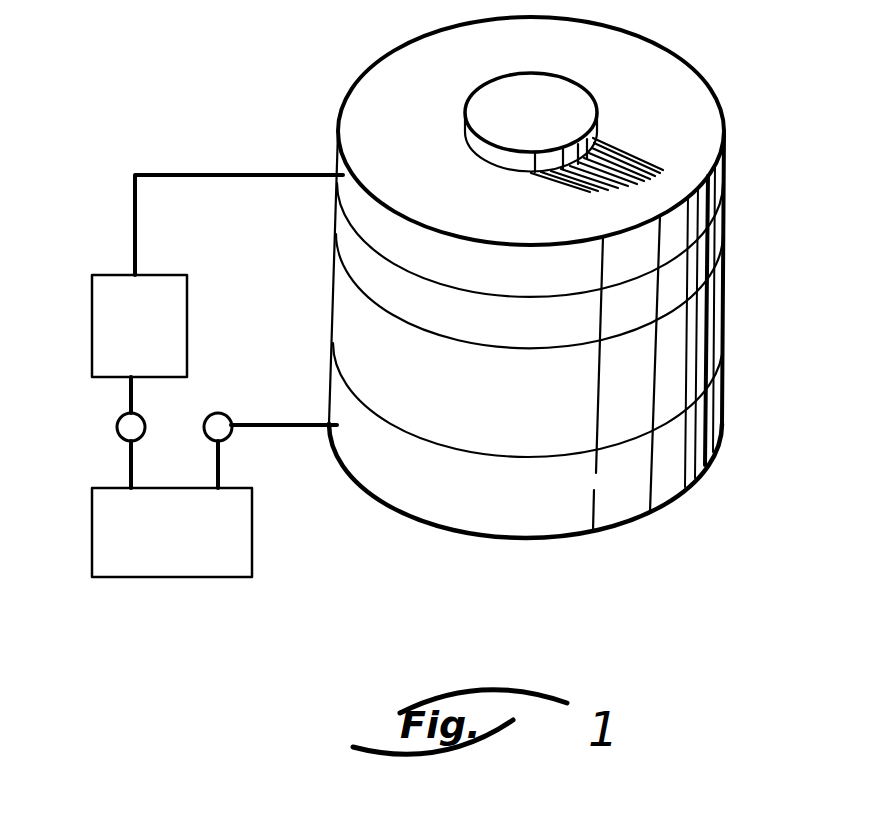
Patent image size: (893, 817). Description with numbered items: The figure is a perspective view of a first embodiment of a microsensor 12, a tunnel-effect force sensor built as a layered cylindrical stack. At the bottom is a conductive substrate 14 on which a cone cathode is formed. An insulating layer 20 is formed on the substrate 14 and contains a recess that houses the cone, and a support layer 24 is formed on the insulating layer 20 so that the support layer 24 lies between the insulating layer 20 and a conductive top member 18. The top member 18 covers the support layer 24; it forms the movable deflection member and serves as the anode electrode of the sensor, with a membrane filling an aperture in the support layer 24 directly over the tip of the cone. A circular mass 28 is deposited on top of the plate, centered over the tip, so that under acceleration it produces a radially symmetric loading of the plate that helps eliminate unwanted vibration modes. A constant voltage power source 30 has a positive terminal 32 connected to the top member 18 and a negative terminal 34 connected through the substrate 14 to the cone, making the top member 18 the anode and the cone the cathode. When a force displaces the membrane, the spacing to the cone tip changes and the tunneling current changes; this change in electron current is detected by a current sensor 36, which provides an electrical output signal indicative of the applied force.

The microsensor 12 is at (640, 535).
The conductive substrate 14 is at (713, 433).
The conductive top member 18 is at (723, 208).
The insulating layer 20 is at (713, 340).
The support layer 24 is at (717, 250).
The circular mass 28 is at (552, 104).
The constant voltage power source 30 is at (178, 548).
The positive terminal 32 is at (117, 427).
The negative terminal 34 is at (232, 440).
The current sensor 36 is at (148, 342).